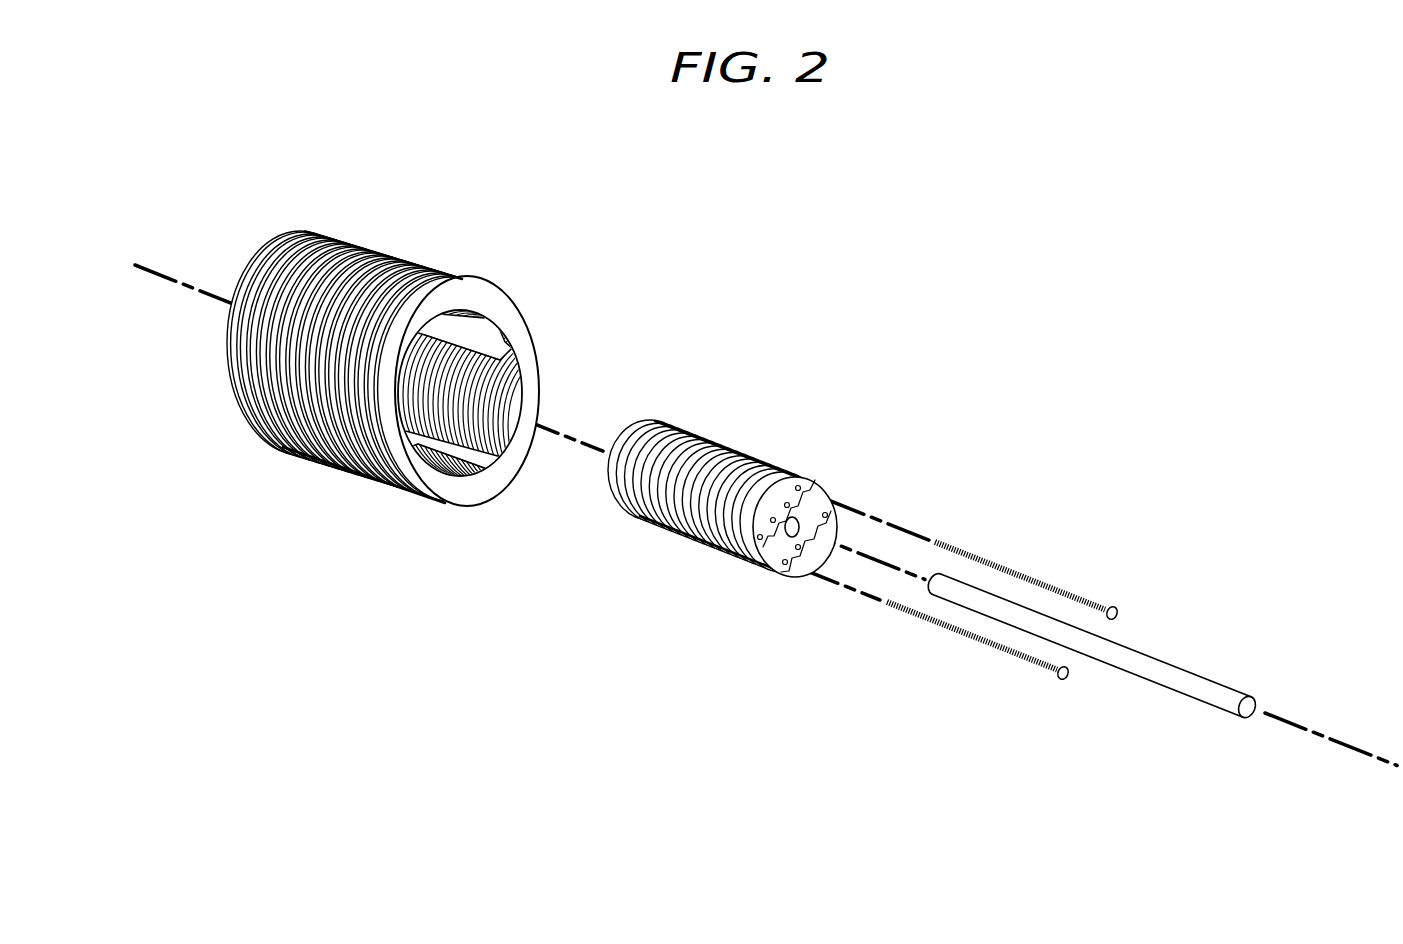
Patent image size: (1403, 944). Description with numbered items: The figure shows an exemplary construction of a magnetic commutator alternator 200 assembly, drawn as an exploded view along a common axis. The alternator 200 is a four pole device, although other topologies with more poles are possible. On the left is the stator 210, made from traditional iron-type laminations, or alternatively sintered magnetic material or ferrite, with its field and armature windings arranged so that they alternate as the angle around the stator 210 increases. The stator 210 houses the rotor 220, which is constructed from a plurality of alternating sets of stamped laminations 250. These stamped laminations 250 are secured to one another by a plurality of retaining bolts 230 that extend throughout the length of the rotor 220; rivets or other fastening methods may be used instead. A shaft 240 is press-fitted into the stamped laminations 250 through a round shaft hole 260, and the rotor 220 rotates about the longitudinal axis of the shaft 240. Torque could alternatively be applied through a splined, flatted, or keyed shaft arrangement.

The magnetic commutator alternator 200 is at (1094, 316).
The stator 210 is at (443, 282).
The rotor 220 is at (690, 433).
The retaining bolts 230 is at (1013, 570).
The shaft 240 is at (1198, 672).
The stamped laminations 250 is at (805, 500).
The shaft hole 260 is at (770, 543).